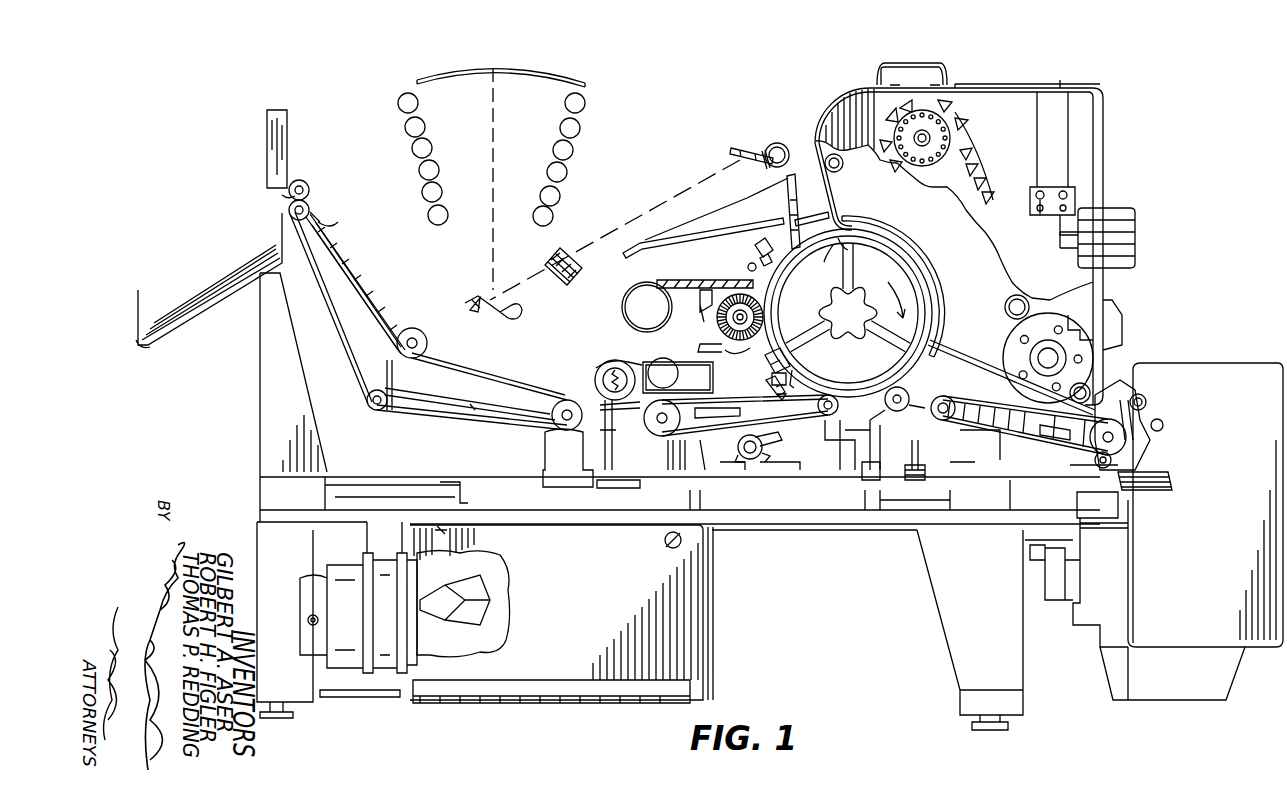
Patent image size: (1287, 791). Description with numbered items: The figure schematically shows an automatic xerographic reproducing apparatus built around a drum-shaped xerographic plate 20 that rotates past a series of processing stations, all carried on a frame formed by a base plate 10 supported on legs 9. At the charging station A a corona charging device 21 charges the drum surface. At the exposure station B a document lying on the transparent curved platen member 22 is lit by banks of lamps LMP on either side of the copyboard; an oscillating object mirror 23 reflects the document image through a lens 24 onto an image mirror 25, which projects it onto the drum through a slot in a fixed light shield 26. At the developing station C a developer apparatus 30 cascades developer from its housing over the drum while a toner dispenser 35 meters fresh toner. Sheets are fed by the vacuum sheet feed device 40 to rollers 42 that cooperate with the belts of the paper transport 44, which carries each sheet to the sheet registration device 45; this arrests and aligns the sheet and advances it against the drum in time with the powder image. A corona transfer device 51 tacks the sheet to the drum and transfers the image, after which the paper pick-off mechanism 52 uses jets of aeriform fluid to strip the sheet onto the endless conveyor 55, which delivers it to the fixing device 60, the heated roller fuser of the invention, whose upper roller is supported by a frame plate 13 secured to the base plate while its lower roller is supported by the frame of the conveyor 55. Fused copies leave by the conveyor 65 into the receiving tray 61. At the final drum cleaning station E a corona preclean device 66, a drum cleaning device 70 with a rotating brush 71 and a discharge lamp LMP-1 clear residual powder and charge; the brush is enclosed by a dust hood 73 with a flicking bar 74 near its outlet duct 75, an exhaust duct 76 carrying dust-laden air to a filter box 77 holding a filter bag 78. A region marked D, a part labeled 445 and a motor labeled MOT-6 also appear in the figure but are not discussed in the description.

The legs 9 is at (305, 705).
The base plate 10 is at (803, 530).
The frame plate 13 is at (545, 455).
The xerographic plate 20 is at (930, 298).
The corona charging device 21 is at (745, 247).
The transparent curved platen member 22 is at (555, 72).
The object mirror 23 is at (476, 304).
The lens 24 is at (574, 284).
The image mirror 25 is at (752, 146).
The fixed light shield 26 is at (831, 259).
The developer apparatus 30 is at (1114, 146).
The toner dispenser 35 is at (1036, 131).
The sheet feed device 40 is at (1206, 358).
The rollers 42 is at (1100, 569).
The paper transport 44 is at (1020, 438).
The sheet registration device 45 is at (921, 461).
The guide 445 is at (879, 472).
The corona transfer device 51 is at (846, 432).
The paper pick-off mechanism 52 is at (792, 386).
The endless conveyor 55 is at (732, 426).
The fixing device 60 is at (587, 367).
The receiving tray 61 is at (180, 322).
The conveyor 65 is at (356, 278).
The corona preclean device 66 is at (750, 358).
The drum cleaning device 70 is at (636, 277).
The rotating brush 71 is at (764, 314).
The dust hood 73 is at (752, 286).
The flicking bar 74 is at (695, 306).
The outlet duct 75 is at (720, 345).
The exhaust duct 76 is at (622, 320).
The filter box 77 is at (715, 575).
The filter bag 78 is at (480, 568).
The charging station A is at (779, 243).
The exposure station B is at (829, 224).
The developing station C is at (930, 255).
The station D is at (898, 395).
The drum cleaning station E is at (740, 375).
The lamps LMP is at (584, 108).
The discharge lamp LMP-1 is at (747, 268).
The motor MOT-6 is at (308, 602).